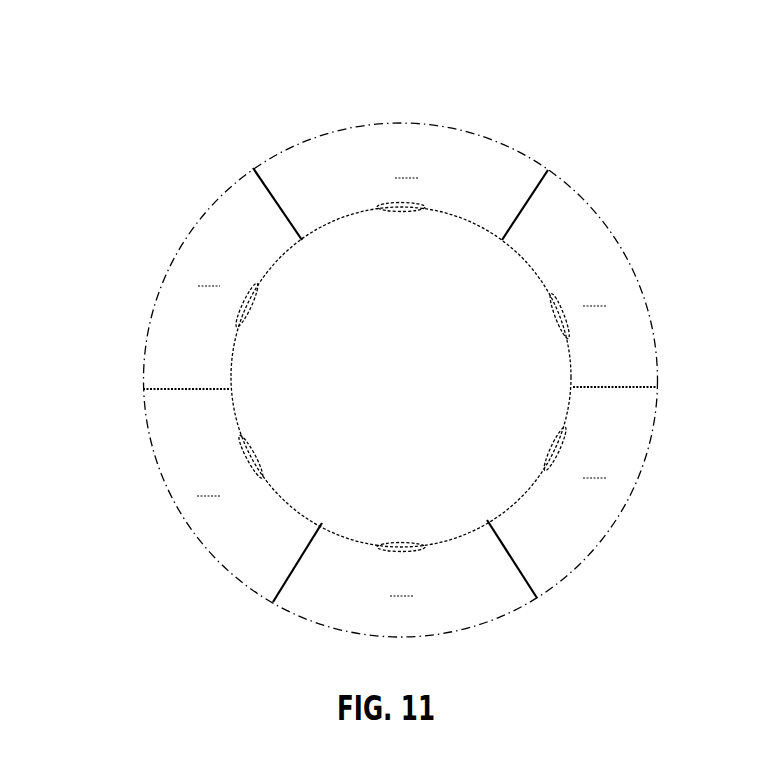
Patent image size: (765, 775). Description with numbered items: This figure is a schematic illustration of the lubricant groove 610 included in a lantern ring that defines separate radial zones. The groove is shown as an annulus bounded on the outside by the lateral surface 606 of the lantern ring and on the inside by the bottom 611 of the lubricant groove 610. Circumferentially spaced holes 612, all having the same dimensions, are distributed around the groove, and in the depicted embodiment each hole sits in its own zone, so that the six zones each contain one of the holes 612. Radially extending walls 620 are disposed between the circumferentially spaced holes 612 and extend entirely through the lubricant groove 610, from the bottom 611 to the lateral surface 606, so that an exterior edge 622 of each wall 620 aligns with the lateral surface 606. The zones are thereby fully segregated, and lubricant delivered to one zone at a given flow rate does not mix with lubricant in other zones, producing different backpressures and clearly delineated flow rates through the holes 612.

The lateral surface 606 is at (360, 111).
The lubricant groove 610 is at (146, 572).
The bottom of the lubricant groove 611 is at (249, 411).
The circumferentially spaced holes 612 is at (276, 458).
The radially extending walls 620 is at (154, 378).
The exterior edge 622 is at (244, 156).